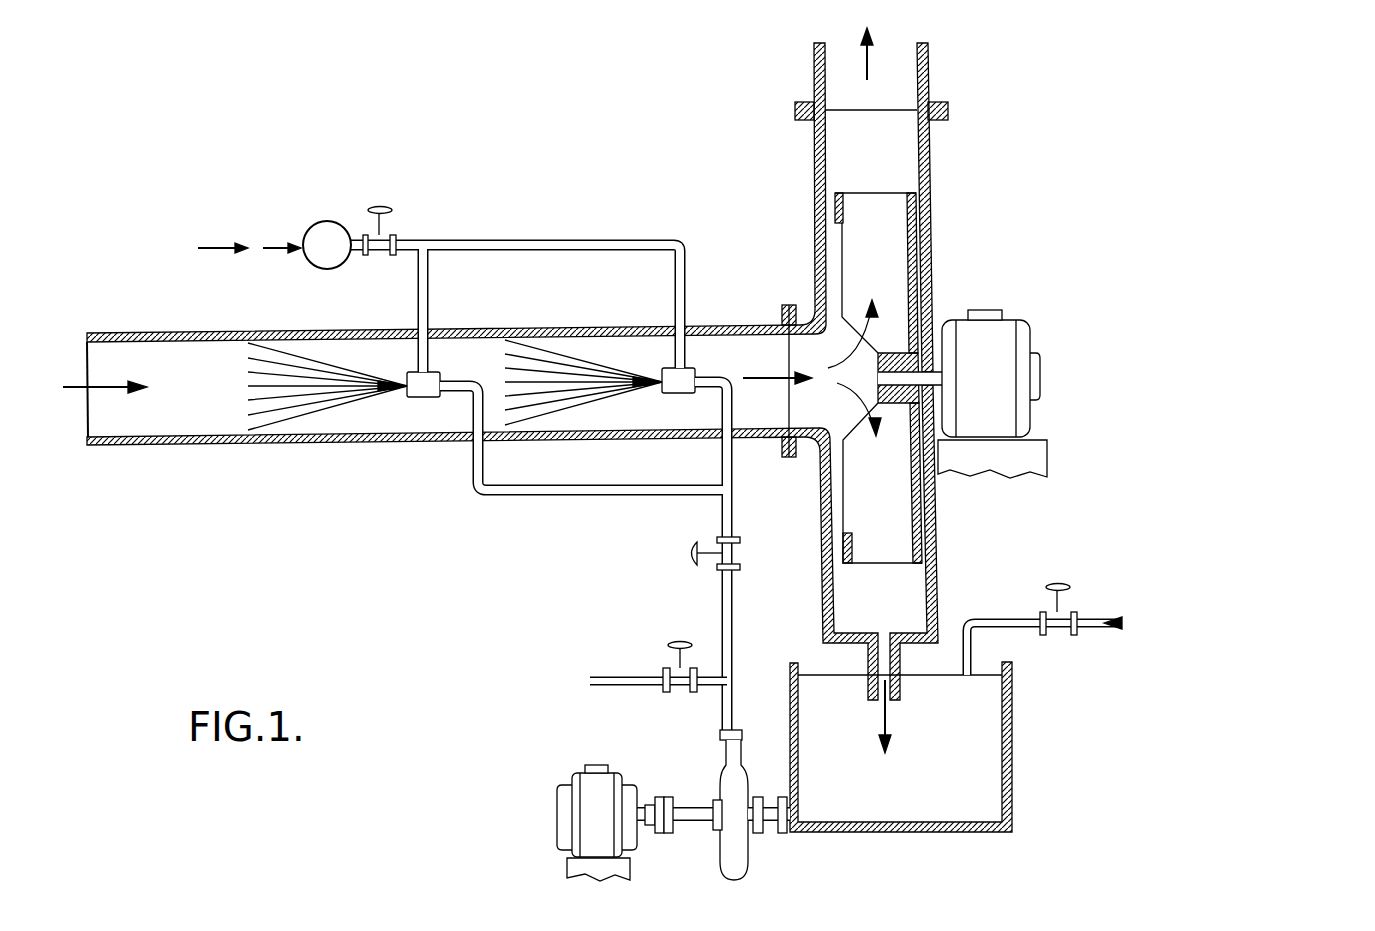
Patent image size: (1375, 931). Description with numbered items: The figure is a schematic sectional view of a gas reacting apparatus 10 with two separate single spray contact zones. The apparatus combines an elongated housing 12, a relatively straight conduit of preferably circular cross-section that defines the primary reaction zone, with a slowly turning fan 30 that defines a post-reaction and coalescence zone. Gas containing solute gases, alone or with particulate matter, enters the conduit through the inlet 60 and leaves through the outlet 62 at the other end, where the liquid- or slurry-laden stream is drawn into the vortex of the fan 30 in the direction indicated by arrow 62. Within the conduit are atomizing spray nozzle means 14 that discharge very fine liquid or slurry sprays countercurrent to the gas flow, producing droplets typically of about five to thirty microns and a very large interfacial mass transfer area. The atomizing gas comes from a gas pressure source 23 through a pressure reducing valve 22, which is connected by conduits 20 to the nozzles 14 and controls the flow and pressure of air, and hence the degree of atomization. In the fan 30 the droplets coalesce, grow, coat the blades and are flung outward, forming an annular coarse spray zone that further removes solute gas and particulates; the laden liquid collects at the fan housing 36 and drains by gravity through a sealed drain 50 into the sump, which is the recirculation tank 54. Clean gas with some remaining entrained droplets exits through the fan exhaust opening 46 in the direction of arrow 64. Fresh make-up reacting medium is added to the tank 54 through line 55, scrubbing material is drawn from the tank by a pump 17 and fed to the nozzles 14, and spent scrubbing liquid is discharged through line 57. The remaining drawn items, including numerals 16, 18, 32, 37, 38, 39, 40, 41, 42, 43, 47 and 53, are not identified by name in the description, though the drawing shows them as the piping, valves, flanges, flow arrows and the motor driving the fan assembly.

The gas reacting apparatus 10 is at (737, 180).
The elongated housing 12 is at (202, 445).
The atomizing spray nozzle means 14 is at (410, 398).
The liquid supply pipe 16 is at (520, 497).
The pump 17 is at (745, 775).
The valve 18 is at (735, 553).
The conduits 20 is at (428, 288).
The pressure reducing valve 22 is at (370, 257).
The gas pressure source 23 is at (326, 221).
The fan 30 is at (930, 268).
The venturi throat 32 is at (897, 352).
The fan housing 36 is at (928, 185).
The inner tube wall 37 is at (907, 258).
The downward flow arrow 38 is at (867, 428).
The inner tube top 39 is at (843, 200).
The upper flange 40 is at (800, 305).
The lower flange 41 is at (790, 457).
The motor 42 is at (1025, 325).
The motor cap 43 is at (1003, 337).
The fan exhaust opening 46 is at (925, 82).
The stack flange 47 is at (797, 102).
The sealed drain 50 is at (935, 670).
The make-up feed valve 53 is at (1057, 640).
The recirculation tank 54 is at (1012, 765).
The line 55 is at (1012, 620).
The line 57 is at (620, 680).
The inlet 60 is at (68, 387).
The outlet 62 is at (777, 363).
The arrow 64 is at (849, 43).